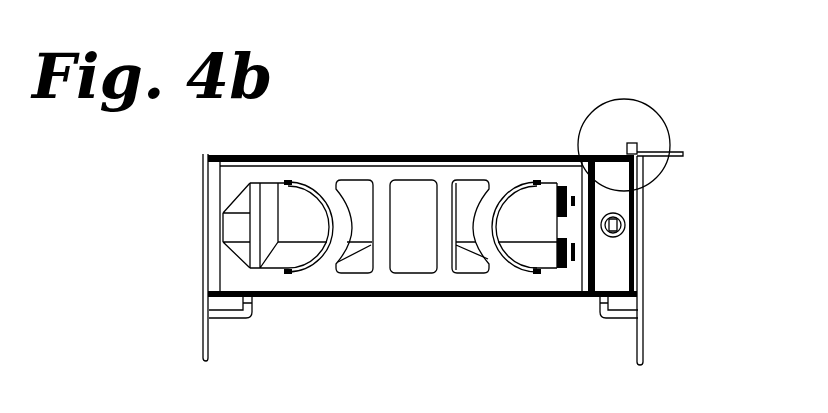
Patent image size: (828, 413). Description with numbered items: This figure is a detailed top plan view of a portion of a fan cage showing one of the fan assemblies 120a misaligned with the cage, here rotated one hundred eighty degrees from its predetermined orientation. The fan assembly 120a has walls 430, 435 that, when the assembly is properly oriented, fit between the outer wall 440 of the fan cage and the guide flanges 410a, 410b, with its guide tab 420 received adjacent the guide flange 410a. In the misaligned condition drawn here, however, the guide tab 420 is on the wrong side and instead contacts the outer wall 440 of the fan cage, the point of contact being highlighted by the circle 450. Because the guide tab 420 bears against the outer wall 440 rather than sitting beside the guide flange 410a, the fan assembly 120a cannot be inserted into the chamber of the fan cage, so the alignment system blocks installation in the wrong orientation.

The wall 430 is at (373, 156).
The outer wall 440 is at (472, 156).
The wall 435 is at (372, 297).
The guide tab 420 is at (637, 143).
The circle 450 is at (620, 101).
The fan assembly 120a is at (638, 255).
The guide flange 410a is at (242, 320).
The guide flange 410b is at (617, 323).